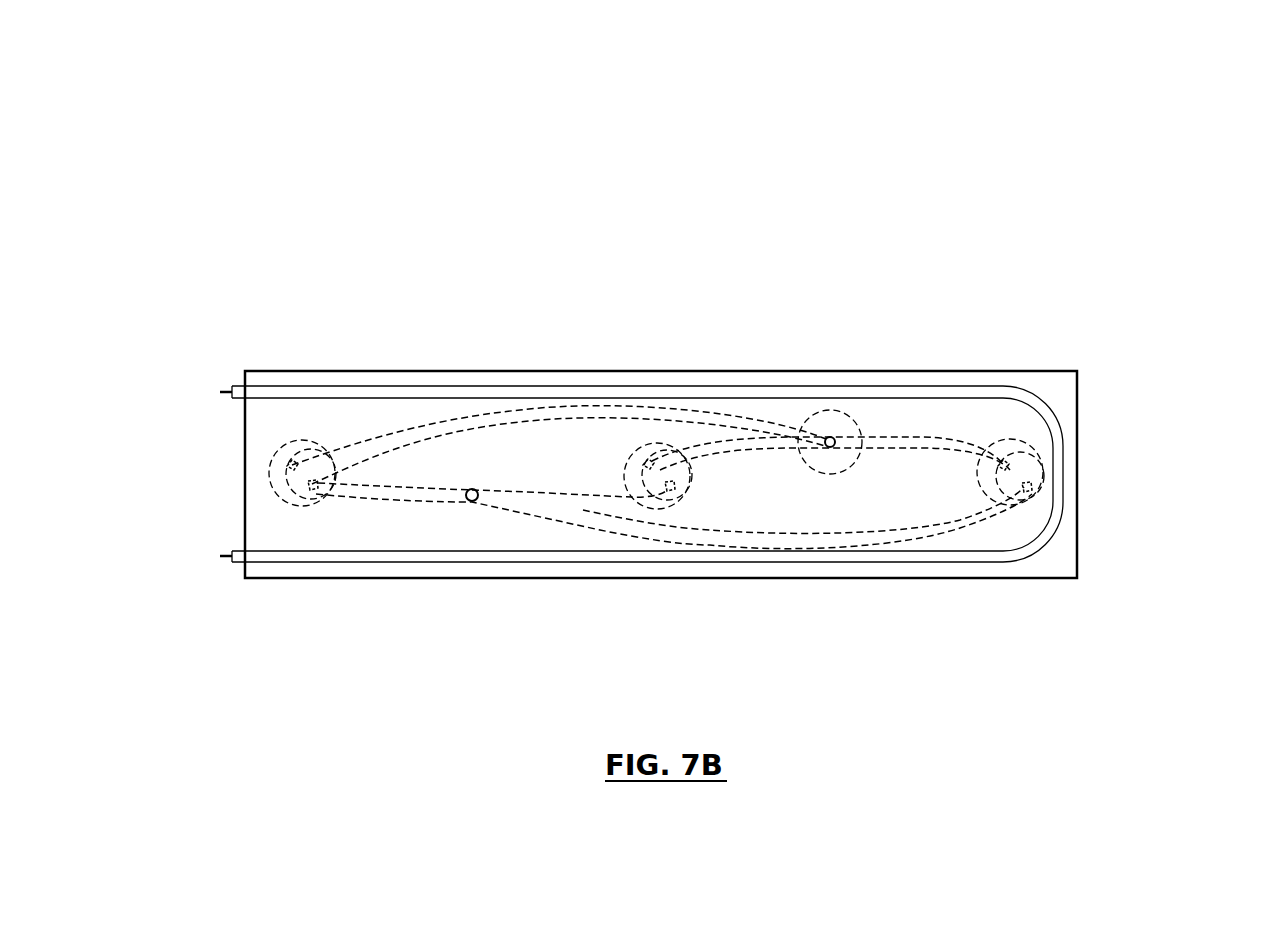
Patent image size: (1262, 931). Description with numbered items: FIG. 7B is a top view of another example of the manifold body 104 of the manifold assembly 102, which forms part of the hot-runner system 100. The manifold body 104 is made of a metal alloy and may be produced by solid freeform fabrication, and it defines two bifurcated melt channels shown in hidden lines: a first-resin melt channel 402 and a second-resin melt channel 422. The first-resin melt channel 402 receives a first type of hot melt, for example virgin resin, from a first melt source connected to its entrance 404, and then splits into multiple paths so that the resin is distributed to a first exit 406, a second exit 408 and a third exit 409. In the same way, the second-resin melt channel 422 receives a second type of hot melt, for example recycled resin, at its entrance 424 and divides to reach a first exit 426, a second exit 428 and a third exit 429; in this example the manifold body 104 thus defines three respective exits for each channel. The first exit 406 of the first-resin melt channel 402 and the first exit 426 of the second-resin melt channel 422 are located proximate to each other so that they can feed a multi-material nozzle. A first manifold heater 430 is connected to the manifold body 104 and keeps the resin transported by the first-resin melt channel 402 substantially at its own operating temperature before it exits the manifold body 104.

The hot-runner system 100 is at (1168, 160).
The manifold assembly 102 is at (1098, 271).
The manifold body 104 is at (1050, 370).
The first-resin melt channel 402 is at (367, 487).
The entrance 404 is at (472, 501).
The first exit 406 is at (313, 494).
The second exit 408 is at (669, 505).
The third exit 409 is at (1032, 488).
The second-resin melt channel 422 is at (925, 437).
The entrance 424 is at (830, 437).
The first exit 426 is at (274, 500).
The second exit 428 is at (630, 505).
The third exit 429 is at (1010, 462).
The first manifold heater 430 is at (232, 396).